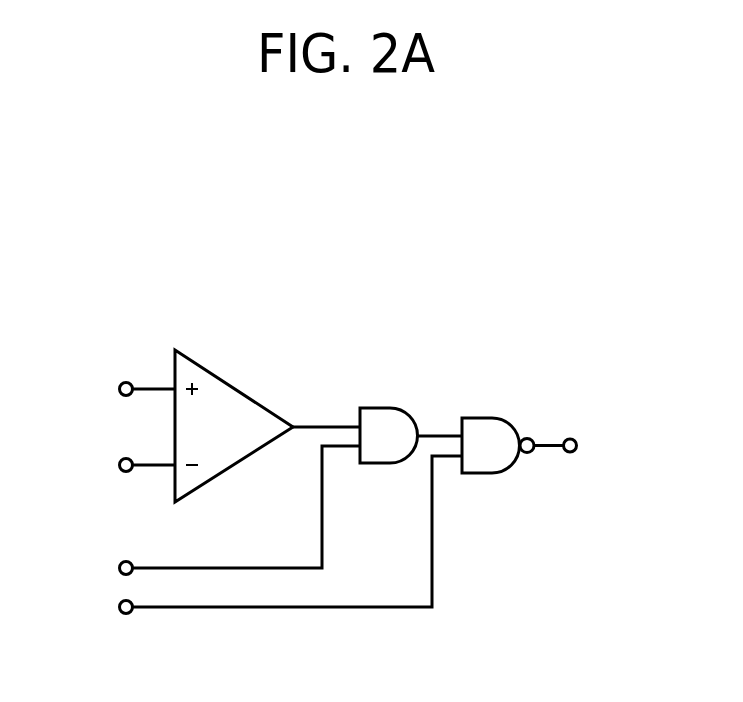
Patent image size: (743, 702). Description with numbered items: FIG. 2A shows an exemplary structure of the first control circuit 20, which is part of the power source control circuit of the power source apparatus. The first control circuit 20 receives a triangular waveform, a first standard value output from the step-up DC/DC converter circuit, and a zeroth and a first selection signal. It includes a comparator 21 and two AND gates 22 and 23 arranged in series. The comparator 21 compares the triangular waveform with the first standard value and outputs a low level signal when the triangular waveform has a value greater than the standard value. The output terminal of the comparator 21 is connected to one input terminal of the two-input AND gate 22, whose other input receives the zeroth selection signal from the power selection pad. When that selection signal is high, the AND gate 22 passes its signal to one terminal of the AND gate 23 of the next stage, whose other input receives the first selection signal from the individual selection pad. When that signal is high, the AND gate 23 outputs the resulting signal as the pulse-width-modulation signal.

The first control circuit 20 is at (523, 232).
The comparator 21 is at (241, 390).
The AND gate 22 is at (377, 408).
The AND gate 23 is at (477, 418).